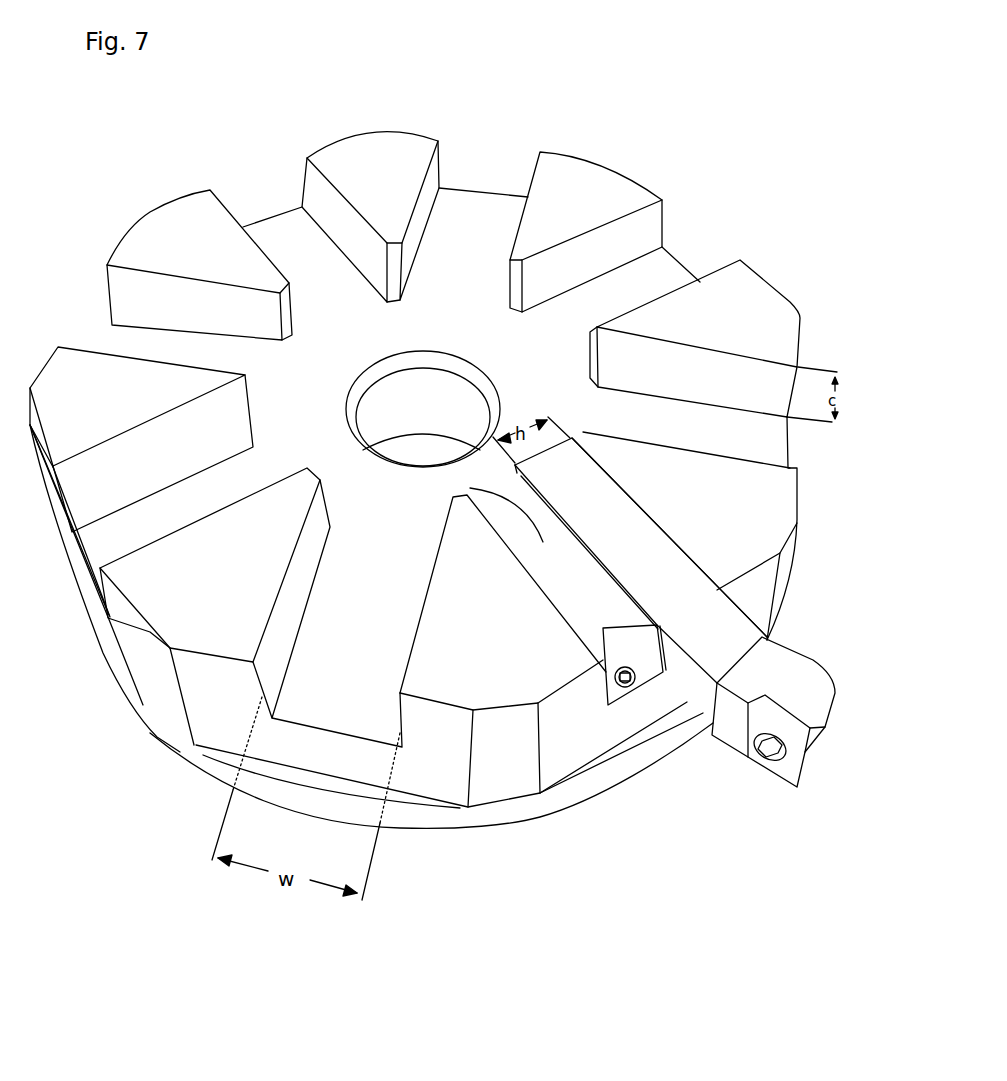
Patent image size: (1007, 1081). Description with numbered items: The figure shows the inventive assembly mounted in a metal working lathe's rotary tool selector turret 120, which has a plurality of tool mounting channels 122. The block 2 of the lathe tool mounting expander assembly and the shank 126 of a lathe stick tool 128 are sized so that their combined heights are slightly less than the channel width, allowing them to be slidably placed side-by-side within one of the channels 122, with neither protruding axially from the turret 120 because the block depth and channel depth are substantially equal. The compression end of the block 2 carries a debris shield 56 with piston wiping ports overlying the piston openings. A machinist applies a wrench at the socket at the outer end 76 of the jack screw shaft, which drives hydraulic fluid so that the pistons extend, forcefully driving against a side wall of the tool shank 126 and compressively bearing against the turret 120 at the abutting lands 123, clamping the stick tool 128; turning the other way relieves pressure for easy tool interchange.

The rotary tool selector turret 120 is at (523, 118).
The tool mounting channels 122 is at (292, 237).
The block 2 is at (493, 487).
The abutting lands 123 is at (547, 597).
The debris shield 56 is at (620, 580).
The shank 126 is at (627, 510).
The outer end of shaft 76 is at (625, 685).
The lathe stick tool 128 is at (748, 750).